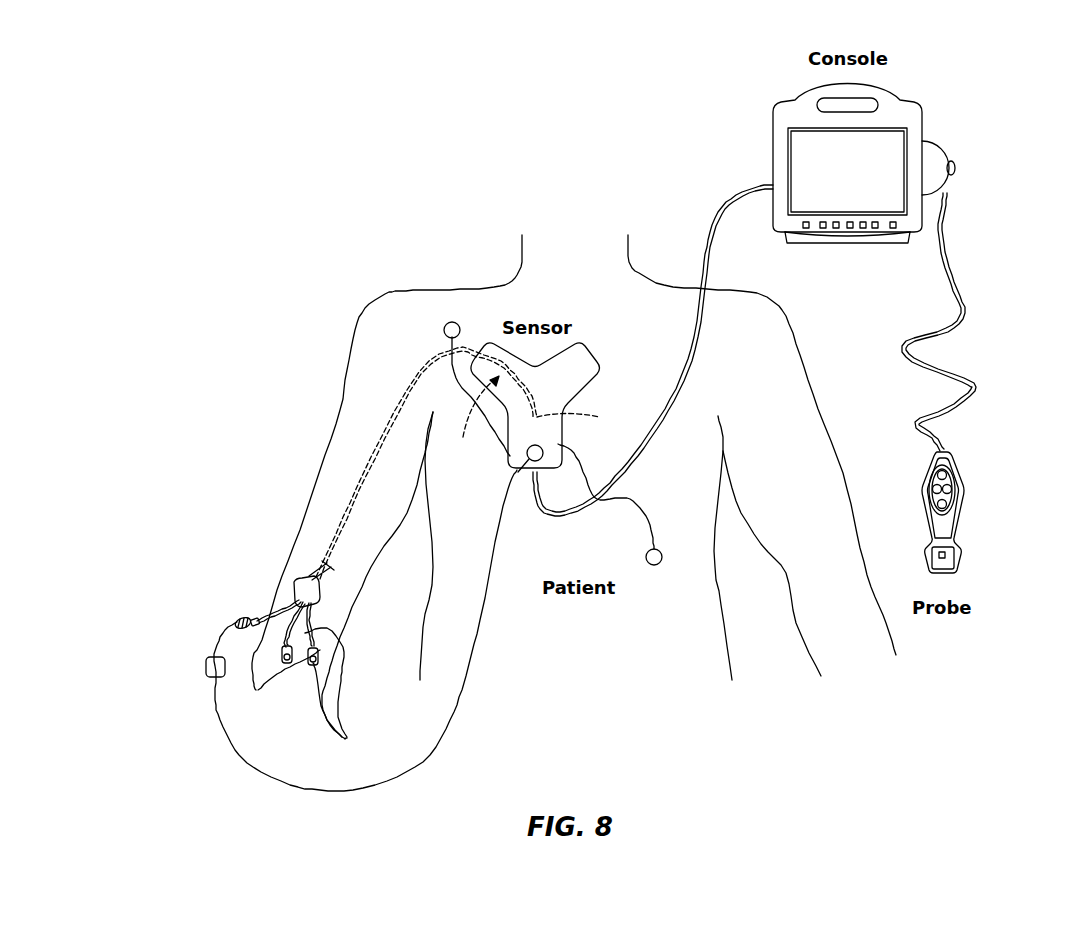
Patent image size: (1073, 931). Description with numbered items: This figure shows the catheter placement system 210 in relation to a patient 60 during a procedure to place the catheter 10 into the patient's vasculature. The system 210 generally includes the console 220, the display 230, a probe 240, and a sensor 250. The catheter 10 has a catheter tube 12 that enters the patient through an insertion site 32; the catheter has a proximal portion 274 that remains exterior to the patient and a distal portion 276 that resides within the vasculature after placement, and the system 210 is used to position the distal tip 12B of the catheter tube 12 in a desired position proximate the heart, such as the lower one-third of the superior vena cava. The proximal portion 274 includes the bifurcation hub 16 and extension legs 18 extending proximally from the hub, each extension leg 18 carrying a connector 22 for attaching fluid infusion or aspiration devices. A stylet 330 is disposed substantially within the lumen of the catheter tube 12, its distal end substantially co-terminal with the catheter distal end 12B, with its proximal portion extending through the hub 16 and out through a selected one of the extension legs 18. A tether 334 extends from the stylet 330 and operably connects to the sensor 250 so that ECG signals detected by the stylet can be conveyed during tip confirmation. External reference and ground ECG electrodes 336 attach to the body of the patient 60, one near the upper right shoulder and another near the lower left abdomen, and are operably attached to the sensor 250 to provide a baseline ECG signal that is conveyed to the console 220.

The catheter 10 is at (313, 571).
The catheter tube 12 is at (373, 452).
The distal tip of the catheter tube 12B is at (588, 416).
The bifurcation hub 16 is at (316, 598).
The extension legs 18 is at (284, 660).
The connector 22 is at (247, 618).
The insertion site 32 is at (330, 562).
The patient 60 is at (423, 288).
The catheter placement system 210 is at (988, 238).
The console 220 is at (905, 112).
The display 230 is at (798, 153).
The probe 240 is at (960, 497).
The sensor 250 is at (598, 356).
The proximal portion 274 is at (283, 602).
The distal portion 276 is at (477, 421).
The stylet 330 is at (205, 667).
The tether 334 is at (480, 640).
The external ECG electrodes 336 is at (455, 383).